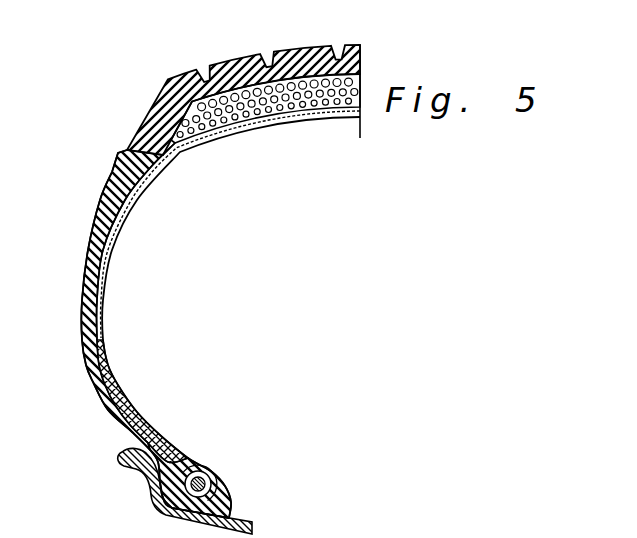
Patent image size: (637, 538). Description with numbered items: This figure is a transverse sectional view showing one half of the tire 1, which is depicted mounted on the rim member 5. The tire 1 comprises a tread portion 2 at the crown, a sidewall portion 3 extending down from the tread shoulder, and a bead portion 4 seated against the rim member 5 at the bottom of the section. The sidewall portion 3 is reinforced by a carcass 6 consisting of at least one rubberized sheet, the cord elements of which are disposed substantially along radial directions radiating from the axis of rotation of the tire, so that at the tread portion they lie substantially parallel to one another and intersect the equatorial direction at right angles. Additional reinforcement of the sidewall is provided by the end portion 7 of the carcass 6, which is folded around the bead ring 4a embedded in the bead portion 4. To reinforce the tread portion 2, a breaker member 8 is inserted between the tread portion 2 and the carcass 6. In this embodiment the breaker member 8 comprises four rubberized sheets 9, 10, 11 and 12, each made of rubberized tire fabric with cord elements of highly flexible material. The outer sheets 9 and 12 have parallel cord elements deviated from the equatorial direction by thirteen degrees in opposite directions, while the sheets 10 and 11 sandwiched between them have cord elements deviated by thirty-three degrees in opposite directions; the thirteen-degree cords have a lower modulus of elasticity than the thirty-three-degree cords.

The tire 1 is at (102, 207).
The tread portion 2 is at (240, 68).
The sidewall portion 3 is at (83, 300).
The bead portion 4 is at (209, 463).
The bead ring 4a is at (218, 484).
The rim member 5 is at (150, 477).
The carcass 6 is at (110, 239).
The end portion of the carcass 7 is at (105, 395).
The breaker member 8 is at (224, 108).
The rubberized sheet 9 is at (163, 152).
The rubberized sheet 10 is at (163, 138).
The rubberized sheet 11 is at (168, 128).
The rubberized sheet 12 is at (173, 118).